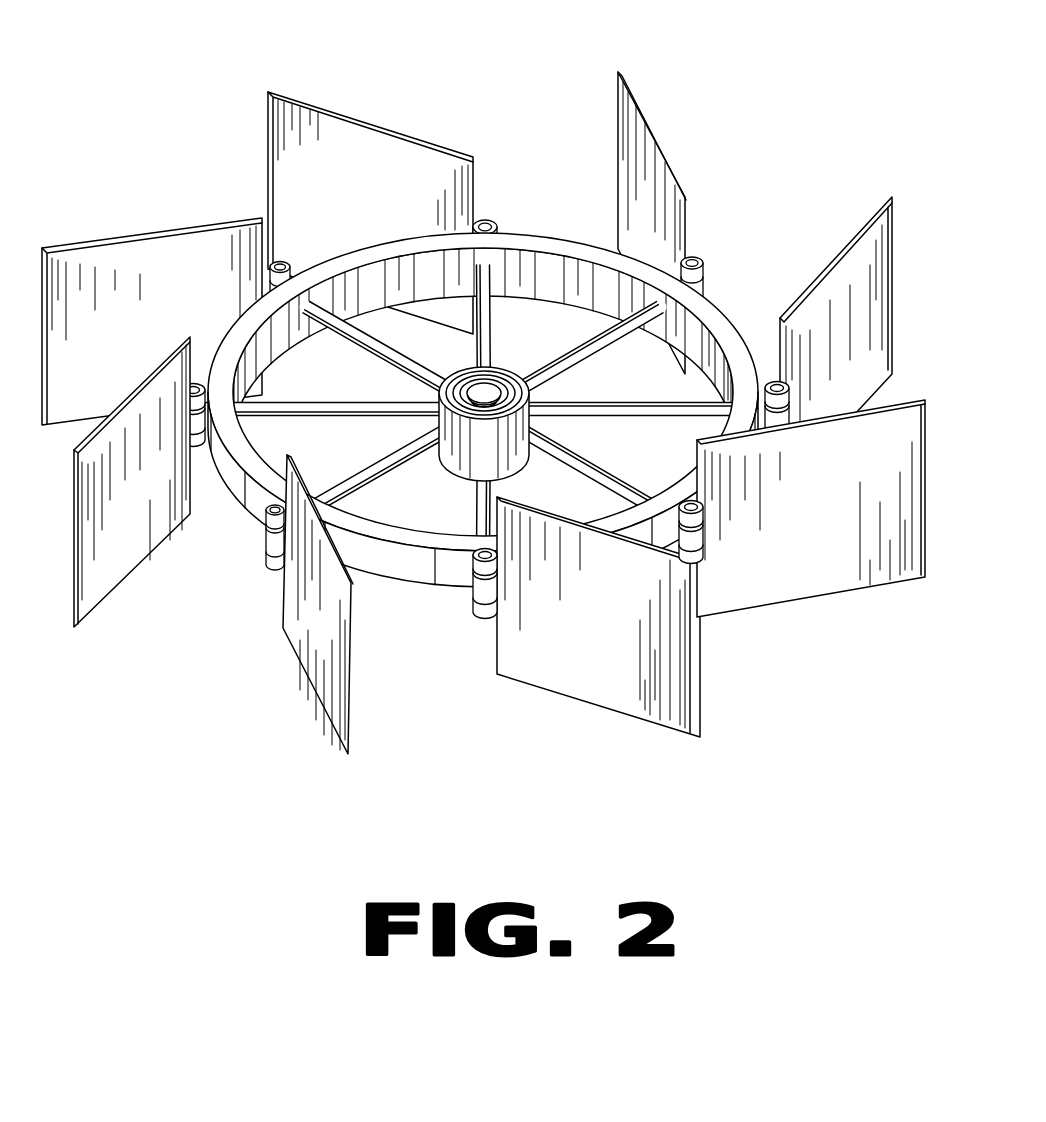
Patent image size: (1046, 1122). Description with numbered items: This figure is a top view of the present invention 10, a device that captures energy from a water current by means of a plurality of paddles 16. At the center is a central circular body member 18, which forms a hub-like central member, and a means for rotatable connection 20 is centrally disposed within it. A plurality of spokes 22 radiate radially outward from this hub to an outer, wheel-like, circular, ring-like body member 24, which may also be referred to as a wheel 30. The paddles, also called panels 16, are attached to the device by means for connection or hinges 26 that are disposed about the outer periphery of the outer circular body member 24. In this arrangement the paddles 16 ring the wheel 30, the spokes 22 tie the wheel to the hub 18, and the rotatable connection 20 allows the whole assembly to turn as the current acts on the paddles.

The present invention 10 is at (483, 386).
The paddles 16 is at (143, 232).
The central circular body member 18 is at (478, 396).
The means for rotatable connection 20 is at (487, 388).
The spokes 22 is at (381, 406).
The outer circular body member 24 is at (462, 592).
The hinges 26 is at (268, 528).
The wheel 30 is at (494, 402).